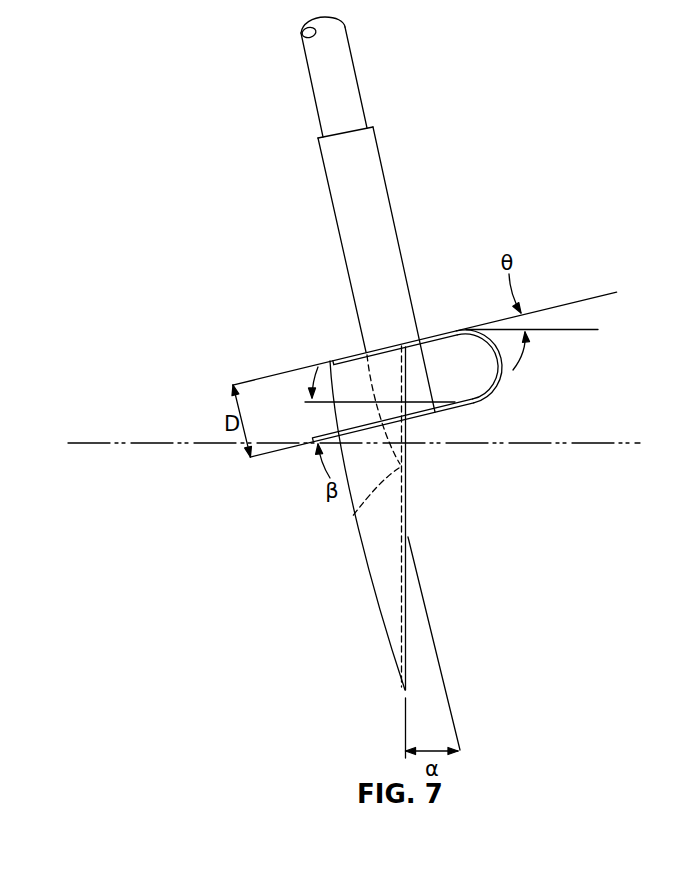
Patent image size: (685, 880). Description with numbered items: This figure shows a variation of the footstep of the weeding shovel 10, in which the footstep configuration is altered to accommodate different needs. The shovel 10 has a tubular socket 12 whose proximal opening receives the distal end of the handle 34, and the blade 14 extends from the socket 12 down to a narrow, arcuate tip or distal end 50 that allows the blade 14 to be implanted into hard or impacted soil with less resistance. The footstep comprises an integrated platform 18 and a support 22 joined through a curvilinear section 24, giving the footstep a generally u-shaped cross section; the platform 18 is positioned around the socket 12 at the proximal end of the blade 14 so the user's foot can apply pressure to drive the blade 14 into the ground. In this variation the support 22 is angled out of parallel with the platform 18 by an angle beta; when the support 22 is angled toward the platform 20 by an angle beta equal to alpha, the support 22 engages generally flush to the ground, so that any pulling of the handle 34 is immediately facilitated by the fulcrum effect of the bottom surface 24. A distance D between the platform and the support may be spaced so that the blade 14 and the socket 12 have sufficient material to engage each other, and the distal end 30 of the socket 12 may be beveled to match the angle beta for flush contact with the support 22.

The shovel 10 is at (203, 54).
The tubular socket 12 is at (340, 238).
The blade 14 is at (380, 556).
The platform 18 is at (353, 354).
The platform 20 is at (456, 327).
The support 22 is at (472, 405).
The curvilinear section 24 is at (500, 365).
The distal end of the socket 30 is at (351, 518).
The handle 34 is at (355, 64).
The distal end of the blade 50 is at (407, 520).